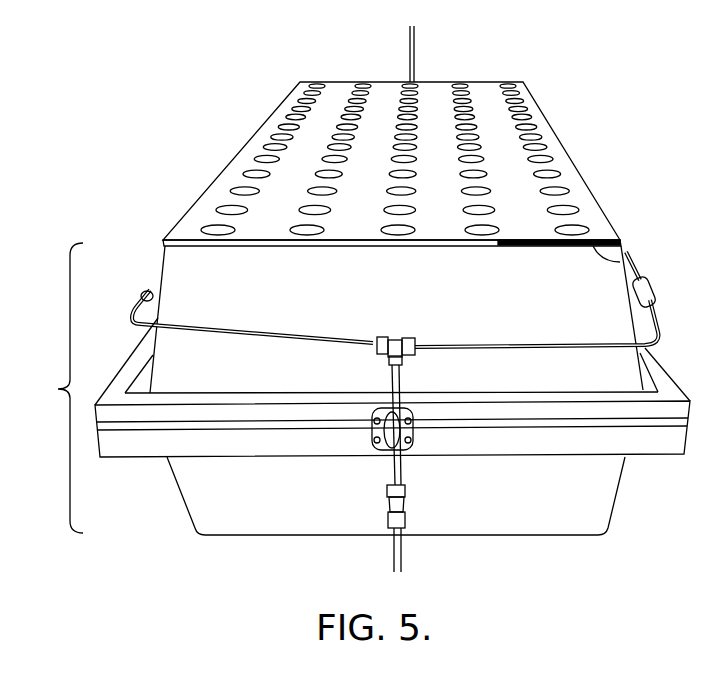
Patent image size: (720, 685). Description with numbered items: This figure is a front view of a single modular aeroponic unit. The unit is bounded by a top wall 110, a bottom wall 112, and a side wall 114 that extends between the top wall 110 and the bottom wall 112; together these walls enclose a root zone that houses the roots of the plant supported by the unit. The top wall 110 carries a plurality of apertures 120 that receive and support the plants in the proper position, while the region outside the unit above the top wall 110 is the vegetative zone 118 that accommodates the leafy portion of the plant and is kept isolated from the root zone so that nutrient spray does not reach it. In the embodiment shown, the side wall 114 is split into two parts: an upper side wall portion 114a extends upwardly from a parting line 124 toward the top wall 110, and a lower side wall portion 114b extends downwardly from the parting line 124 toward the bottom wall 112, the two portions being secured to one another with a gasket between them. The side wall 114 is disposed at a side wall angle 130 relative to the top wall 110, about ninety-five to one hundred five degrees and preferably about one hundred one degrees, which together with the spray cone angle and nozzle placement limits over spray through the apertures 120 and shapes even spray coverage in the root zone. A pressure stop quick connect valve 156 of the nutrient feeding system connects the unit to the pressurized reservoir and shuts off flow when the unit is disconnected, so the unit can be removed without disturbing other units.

The top wall 110 is at (296, 165).
The bottom wall 112 is at (228, 534).
The side wall 114 is at (50, 388).
The side wall portion 114a is at (177, 268).
The side wall portion 114b is at (297, 486).
The vegetative zone 118 is at (345, 58).
The apertures 120 is at (317, 226).
The parting line 124 is at (283, 432).
The side wall angle 130 is at (600, 262).
The pressure stop quick connect valve 156 is at (402, 513).